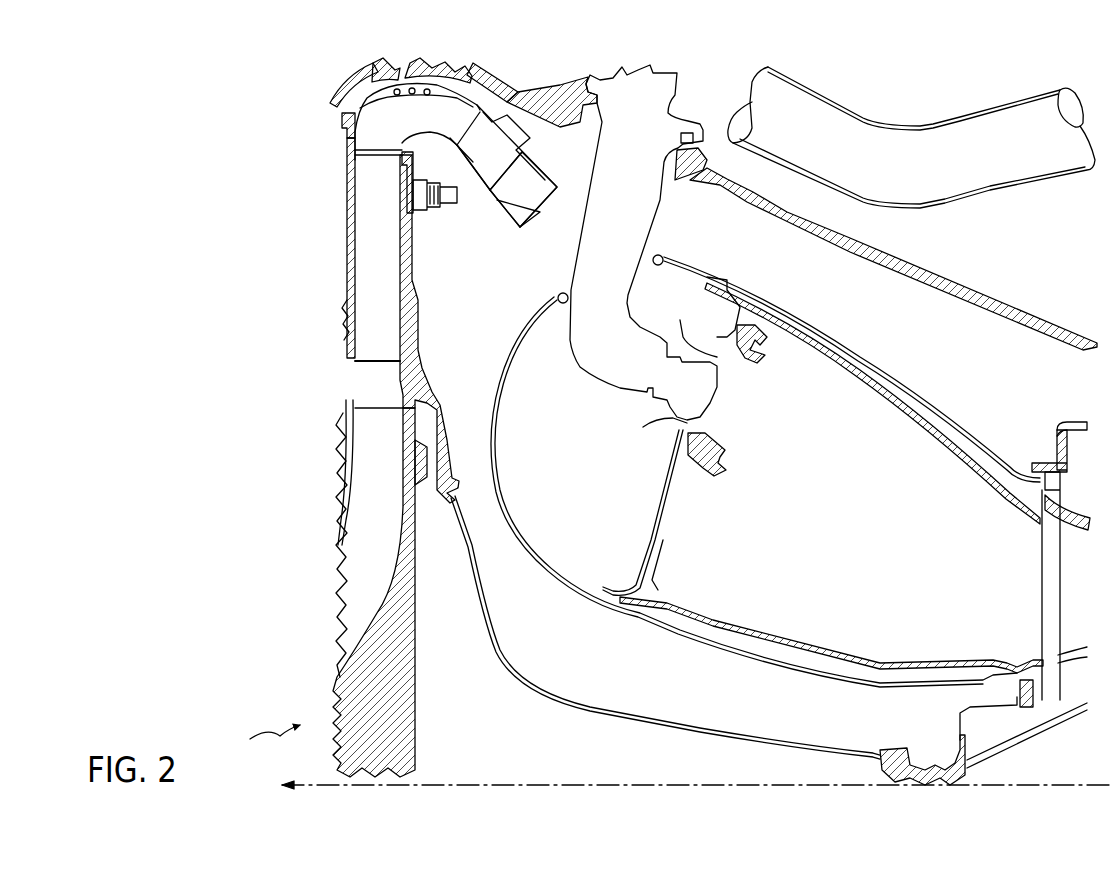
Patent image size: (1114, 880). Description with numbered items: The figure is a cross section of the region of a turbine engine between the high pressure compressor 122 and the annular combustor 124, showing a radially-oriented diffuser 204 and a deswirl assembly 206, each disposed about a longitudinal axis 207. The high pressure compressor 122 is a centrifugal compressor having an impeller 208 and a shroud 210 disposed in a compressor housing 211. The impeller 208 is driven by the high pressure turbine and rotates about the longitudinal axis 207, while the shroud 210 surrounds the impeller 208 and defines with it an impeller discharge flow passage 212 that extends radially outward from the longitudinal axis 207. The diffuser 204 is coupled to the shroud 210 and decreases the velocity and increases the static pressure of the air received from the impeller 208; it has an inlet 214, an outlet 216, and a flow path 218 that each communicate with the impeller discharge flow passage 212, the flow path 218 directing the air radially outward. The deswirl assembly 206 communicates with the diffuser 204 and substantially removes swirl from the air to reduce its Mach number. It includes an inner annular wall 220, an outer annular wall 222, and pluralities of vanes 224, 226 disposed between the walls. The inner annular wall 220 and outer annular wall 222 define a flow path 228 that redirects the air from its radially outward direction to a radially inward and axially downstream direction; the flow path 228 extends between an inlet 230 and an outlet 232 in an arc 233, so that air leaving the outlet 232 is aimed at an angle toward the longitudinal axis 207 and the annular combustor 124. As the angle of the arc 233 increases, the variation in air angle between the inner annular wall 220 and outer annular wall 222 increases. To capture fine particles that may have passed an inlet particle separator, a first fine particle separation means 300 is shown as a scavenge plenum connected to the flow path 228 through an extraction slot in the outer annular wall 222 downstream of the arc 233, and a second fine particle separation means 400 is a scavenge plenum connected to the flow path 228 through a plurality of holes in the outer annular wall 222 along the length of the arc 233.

The high pressure compressor 122 is at (252, 738).
The annular combustor 124 is at (705, 731).
The radially-oriented diffuser 204 is at (347, 240).
The deswirl assembly 206 is at (410, 98).
The longitudinal axis 207 is at (470, 785).
The impeller 208 is at (342, 687).
The shroud 210 is at (347, 458).
The compressor housing 211 is at (345, 78).
The impeller discharge flow passage 212 is at (350, 497).
The inlet 214 is at (367, 363).
The outlet 216 is at (370, 153).
The flow path 218 is at (394, 266).
The inner annular wall 220 is at (407, 140).
The outer annular wall 222 is at (377, 70).
The vanes 224 is at (493, 147).
The vanes 226 is at (537, 172).
The flow path 228 is at (453, 124).
The inlet 230 is at (385, 160).
The outlet 232 is at (538, 213).
The arc 233 is at (420, 70).
The first fine particle separation means 300 is at (510, 97).
The second fine particle separation means 400 is at (362, 102).